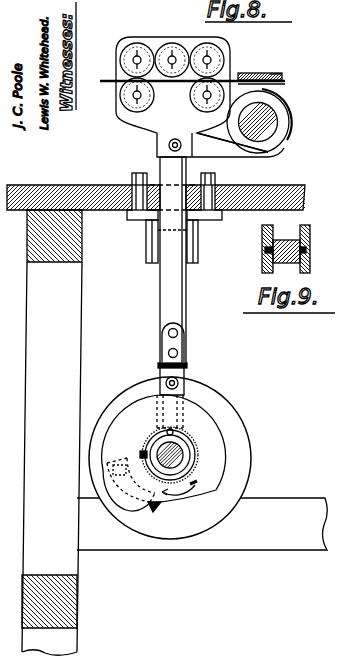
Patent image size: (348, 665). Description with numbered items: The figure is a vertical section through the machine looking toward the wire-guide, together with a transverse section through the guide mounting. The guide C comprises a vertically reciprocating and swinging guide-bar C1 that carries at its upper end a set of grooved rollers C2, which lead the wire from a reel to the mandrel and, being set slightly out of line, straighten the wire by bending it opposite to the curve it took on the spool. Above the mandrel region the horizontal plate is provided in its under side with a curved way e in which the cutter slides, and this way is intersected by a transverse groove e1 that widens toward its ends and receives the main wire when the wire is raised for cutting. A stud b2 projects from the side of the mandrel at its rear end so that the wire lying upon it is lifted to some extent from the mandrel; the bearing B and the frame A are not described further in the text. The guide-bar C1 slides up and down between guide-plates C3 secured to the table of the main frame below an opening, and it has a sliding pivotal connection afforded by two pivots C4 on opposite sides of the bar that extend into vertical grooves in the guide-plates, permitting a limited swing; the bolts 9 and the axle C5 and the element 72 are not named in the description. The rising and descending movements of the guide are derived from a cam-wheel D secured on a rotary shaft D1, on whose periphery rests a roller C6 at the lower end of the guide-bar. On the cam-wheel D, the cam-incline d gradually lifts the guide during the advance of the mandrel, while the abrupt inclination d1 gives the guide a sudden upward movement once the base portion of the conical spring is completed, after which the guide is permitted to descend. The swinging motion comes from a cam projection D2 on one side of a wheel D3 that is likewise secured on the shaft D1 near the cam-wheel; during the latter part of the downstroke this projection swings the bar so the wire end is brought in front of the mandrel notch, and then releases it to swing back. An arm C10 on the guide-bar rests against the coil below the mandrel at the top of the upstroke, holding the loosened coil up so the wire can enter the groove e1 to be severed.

In FIG. 8, the guide C is at (200, 88).
In FIG. 8, the grooved rollers C2 is at (148, 106).
In FIG. 8, the curved way e is at (192, 70).
In FIG. 8, the transverse groove e1 is at (272, 74).
In FIG. 8, the stud b2 is at (289, 94).
In FIG. 8, the bearing B is at (290, 122).
In FIG. 8, the arm C10 is at (224, 152).
In FIG. 8, the guide-bar C1 is at (175, 288).
In FIG. 8, the frame A is at (167, 413).
In FIG. 8, the bolts 9 is at (135, 225).
In FIG. 8, the guide-plates C3 is at (148, 240).
In FIG. 9, the guide-plates C3 is at (265, 268).
In FIG. 8, the pivots C4 is at (199, 242).
In FIG. 9, the pivots C4 is at (264, 250).
In FIG. 8, the guide axle C5 is at (189, 238).
In FIG. 9, the guide axle C5 is at (271, 231).
In FIG. 8, the roller C6 is at (160, 385).
In FIG. 8, the abrupt inclination d1 is at (186, 397).
In FIG. 8, the cam-incline d is at (222, 435).
In FIG. 8, the wheel rim gap 72 is at (104, 430).
In FIG. 8, the cam-wheel D is at (131, 467).
In FIG. 8, the rotary shaft D1 is at (196, 456).
In FIG. 8, the cam projection D2 is at (155, 508).
In FIG. 8, the wheel D3 is at (179, 458).